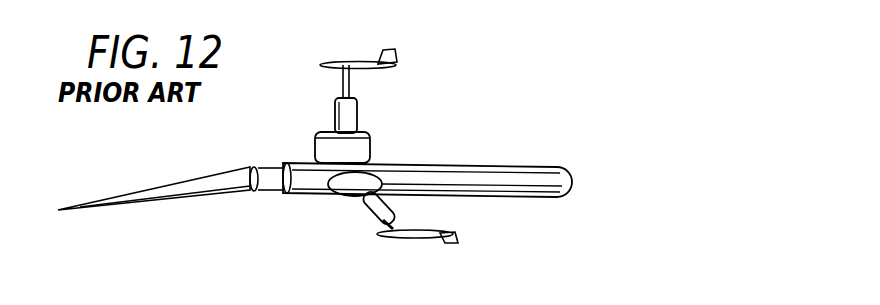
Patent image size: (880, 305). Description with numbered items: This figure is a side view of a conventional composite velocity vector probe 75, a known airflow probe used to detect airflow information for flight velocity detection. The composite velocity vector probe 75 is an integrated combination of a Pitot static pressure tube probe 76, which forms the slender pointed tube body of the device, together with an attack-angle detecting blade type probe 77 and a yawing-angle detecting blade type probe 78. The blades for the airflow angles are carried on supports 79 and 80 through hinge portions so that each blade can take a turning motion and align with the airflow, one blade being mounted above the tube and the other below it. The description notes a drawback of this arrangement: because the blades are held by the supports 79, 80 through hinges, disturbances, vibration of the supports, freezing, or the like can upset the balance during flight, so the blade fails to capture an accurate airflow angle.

The composite velocity vector probe 75 is at (485, 166).
The Pitot static pressure tube probe 76 is at (90, 213).
The attack-angle detecting blade type probe 77 is at (421, 238).
The yawing-angle detecting blade type probe 78 is at (397, 46).
The support 79 is at (436, 228).
The support 80 is at (350, 88).